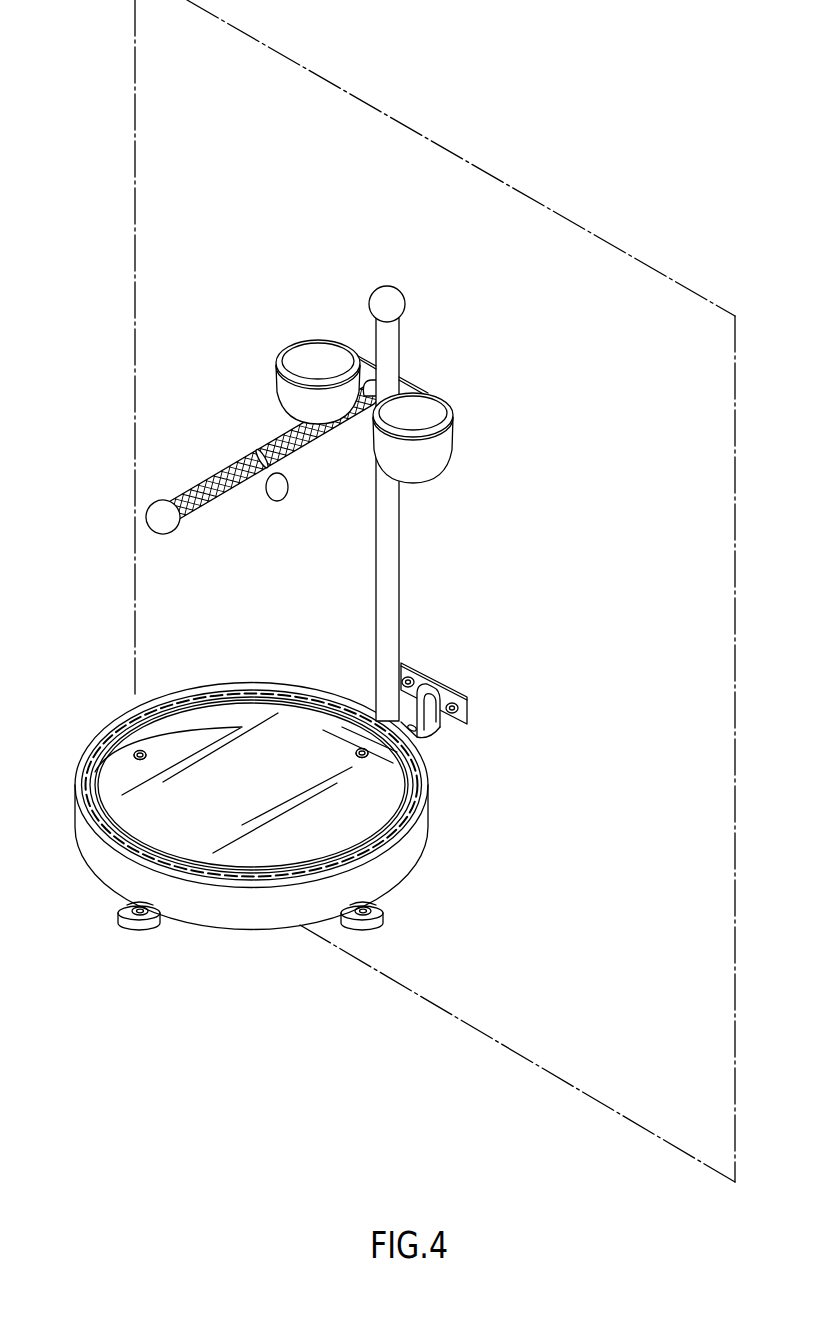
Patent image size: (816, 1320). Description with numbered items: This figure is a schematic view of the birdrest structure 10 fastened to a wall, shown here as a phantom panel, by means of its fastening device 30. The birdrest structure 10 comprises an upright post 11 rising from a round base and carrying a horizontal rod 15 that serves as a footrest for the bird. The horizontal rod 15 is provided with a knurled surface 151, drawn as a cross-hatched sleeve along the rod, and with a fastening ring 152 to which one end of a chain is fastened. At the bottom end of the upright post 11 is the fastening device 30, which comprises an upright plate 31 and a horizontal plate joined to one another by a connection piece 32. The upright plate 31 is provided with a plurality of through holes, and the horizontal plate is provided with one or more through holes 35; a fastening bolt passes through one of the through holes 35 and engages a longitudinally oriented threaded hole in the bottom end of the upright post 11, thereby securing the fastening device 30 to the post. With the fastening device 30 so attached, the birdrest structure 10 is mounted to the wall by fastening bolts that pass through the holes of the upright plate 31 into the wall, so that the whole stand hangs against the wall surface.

The birdrest structure 10 is at (314, 608).
The upright post 11 is at (388, 572).
The horizontal rod 15 is at (293, 494).
The knurled surface 151 is at (256, 484).
The fastening ring 152 is at (283, 501).
The fastening device 30 is at (480, 704).
The upright plate 31 is at (467, 723).
The connection piece 32 is at (427, 693).
The through hole 35 is at (428, 737).